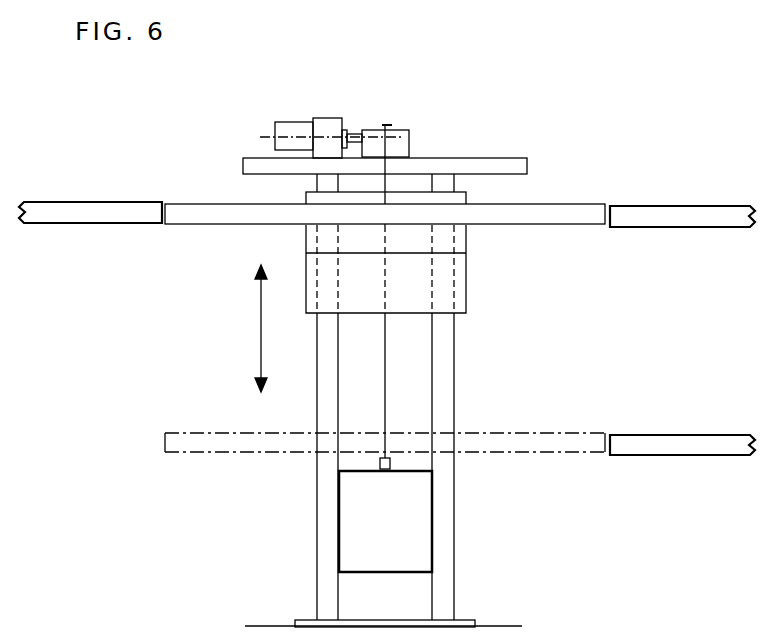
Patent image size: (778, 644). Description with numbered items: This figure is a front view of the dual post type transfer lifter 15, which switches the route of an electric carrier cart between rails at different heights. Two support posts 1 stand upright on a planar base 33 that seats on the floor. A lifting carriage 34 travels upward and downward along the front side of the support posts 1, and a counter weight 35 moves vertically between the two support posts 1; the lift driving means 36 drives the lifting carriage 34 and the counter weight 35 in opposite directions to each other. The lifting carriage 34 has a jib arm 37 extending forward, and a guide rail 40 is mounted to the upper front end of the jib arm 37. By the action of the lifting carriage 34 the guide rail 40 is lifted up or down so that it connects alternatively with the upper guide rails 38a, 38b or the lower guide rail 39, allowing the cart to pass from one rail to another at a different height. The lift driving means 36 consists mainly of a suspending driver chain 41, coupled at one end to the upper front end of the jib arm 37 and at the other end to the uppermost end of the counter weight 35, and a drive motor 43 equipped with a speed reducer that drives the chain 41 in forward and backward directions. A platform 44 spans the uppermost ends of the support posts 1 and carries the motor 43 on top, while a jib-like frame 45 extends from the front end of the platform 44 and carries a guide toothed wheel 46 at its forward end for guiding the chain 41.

The support post 1 is at (445, 407).
The dual post type transfer lifter 15 is at (465, 363).
The planar base 33 is at (398, 622).
The lifting carriage 34 is at (466, 285).
The counter weight 35 is at (412, 528).
The lift driving means 36 is at (335, 110).
The jib arm 37 is at (412, 197).
The upper guide rail 38a is at (95, 212).
The upper guide rail 38b is at (693, 213).
The lower guide rail 39 is at (687, 442).
The guide rail 40 is at (223, 217).
The suspending driver chain 41 is at (385, 407).
The drive motor 43 is at (288, 128).
The platform 44 is at (509, 167).
The jib-like frame 45 is at (371, 130).
The guide toothed wheel 46 is at (388, 123).